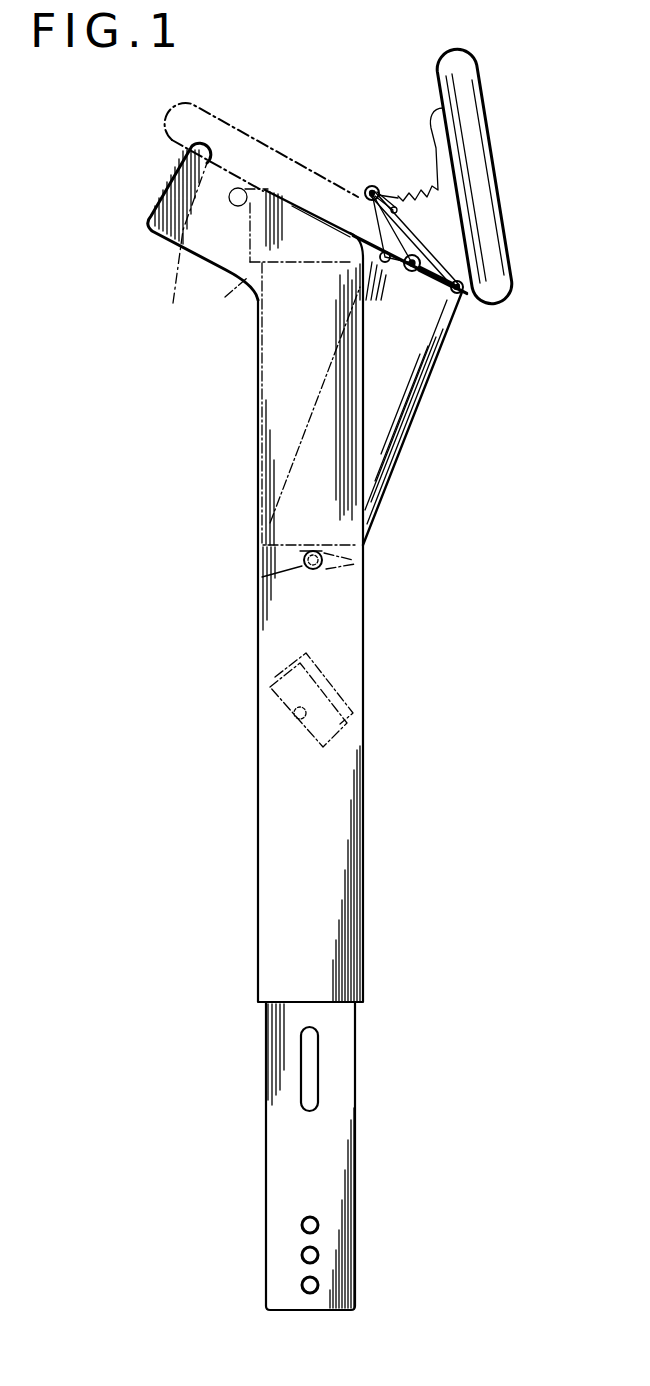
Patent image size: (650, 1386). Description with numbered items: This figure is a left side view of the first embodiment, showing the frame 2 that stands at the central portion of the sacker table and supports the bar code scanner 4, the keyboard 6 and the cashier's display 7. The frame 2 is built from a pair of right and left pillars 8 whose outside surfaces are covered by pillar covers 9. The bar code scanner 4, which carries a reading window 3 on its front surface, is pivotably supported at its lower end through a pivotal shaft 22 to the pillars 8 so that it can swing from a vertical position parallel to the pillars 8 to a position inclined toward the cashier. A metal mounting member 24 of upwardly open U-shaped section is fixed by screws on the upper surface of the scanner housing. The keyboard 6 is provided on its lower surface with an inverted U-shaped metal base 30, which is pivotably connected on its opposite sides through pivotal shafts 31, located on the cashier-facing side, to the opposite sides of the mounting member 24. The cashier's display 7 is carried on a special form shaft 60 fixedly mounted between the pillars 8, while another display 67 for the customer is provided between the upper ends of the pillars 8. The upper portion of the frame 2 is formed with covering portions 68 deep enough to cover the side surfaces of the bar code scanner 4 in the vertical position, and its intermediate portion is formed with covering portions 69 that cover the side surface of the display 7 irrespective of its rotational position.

The frame 2 is at (288, 648).
The reading window 3 is at (427, 383).
The bar code scanner 4 is at (258, 274).
The keyboard 6 is at (262, 150).
The display 7 is at (340, 693).
The pillar 8 is at (287, 1113).
The pillar cover 9 is at (275, 847).
The pivotal shaft 22 is at (262, 578).
The mounting member 24 is at (430, 247).
The base 30 is at (418, 198).
The pivotal shaft 31 is at (459, 298).
The special form shaft 60 is at (288, 720).
The display 67 is at (182, 243).
The covering portion 68 is at (283, 392).
The covering portion 69 is at (335, 822).